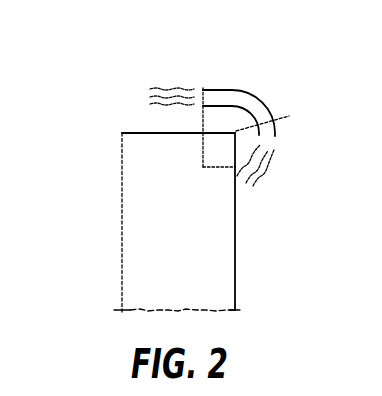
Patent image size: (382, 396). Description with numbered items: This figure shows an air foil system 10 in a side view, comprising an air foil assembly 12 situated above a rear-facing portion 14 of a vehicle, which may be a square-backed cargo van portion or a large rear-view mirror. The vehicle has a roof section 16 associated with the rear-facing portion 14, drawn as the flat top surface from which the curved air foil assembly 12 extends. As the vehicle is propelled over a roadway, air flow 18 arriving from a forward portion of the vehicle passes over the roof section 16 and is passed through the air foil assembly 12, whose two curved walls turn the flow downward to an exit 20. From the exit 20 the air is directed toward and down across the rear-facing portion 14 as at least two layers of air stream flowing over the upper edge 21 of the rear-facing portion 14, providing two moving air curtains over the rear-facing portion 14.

The air foil system 10 is at (274, 89).
The air foil assembly 12 is at (230, 89).
The rear-facing portion 14 is at (238, 242).
The roof section 16 is at (143, 130).
The air flow 18 is at (163, 87).
The exit 20 is at (262, 172).
The upper edge 21 is at (277, 120).